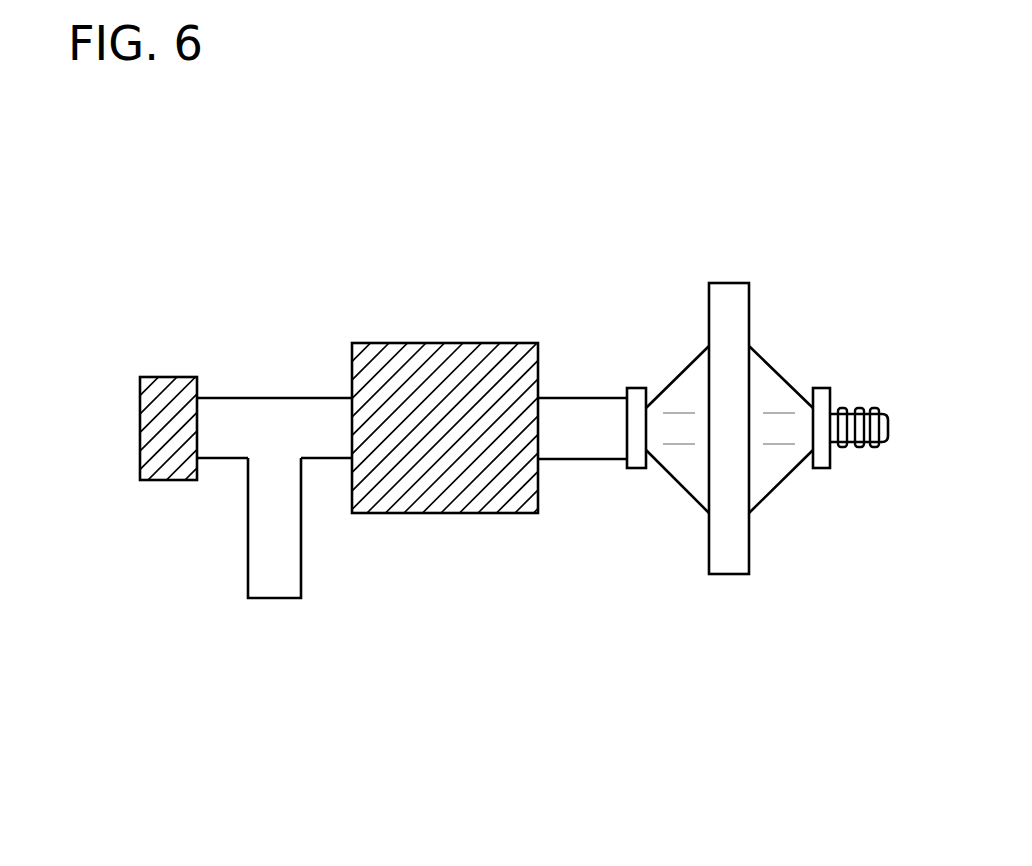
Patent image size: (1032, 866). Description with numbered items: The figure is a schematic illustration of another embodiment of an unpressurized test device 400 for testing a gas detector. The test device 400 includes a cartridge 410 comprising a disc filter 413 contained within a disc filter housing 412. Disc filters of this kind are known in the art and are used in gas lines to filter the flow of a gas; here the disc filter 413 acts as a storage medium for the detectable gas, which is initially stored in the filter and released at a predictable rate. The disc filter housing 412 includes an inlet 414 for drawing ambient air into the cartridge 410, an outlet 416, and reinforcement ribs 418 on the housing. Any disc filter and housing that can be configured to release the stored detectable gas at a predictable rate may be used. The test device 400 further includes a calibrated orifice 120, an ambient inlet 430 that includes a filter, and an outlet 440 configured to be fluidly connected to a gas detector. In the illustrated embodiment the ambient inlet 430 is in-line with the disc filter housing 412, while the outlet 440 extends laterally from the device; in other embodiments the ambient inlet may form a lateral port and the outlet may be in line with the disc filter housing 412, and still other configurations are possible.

The test device 400 is at (182, 250).
The ambient inlet 430 is at (140, 430).
The outlet 440 is at (275, 600).
The calibrated orifice 120 is at (433, 342).
The outlet 416 is at (587, 412).
The cartridge 410 is at (908, 615).
The disc filter housing 412 is at (728, 282).
The disc filter 413 is at (720, 307).
The reinforcement ribs 418 is at (778, 380).
The inlet 414 is at (853, 412).